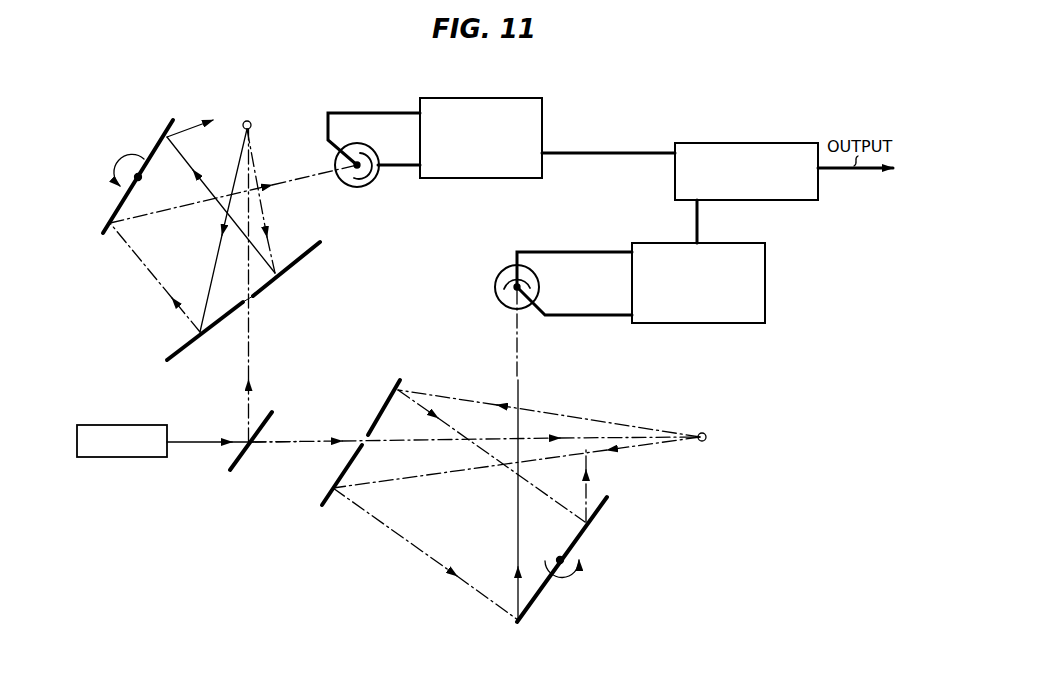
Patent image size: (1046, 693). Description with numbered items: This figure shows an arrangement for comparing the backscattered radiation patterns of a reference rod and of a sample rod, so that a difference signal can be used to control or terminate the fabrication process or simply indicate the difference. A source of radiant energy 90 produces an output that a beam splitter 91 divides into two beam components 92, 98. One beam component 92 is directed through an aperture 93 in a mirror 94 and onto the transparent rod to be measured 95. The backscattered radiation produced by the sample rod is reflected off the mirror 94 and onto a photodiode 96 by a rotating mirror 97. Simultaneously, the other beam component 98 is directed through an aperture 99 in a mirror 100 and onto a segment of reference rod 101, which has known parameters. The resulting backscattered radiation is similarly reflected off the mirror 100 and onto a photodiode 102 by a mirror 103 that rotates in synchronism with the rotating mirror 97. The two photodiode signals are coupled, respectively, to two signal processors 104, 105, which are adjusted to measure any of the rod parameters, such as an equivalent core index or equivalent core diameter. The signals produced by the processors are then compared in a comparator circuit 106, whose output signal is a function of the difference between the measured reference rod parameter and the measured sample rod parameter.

The source of radiant energy 90 is at (140, 425).
The beam splitter 91 is at (232, 466).
The beam component 92 is at (272, 442).
The aperture 93 is at (368, 432).
The mirror 94 is at (350, 462).
The transparent rod to be measured 95 is at (704, 433).
The photodiode 96 is at (501, 274).
The rotating mirror 97 is at (538, 595).
The beam component 98 is at (249, 358).
The aperture 99 is at (250, 300).
The mirror 100 is at (307, 253).
The segment of reference rod 101 is at (249, 121).
The photodiode 102 is at (372, 143).
The mirror 103 is at (157, 137).
The signal processor 104 is at (765, 292).
The signal processor 105 is at (542, 122).
The comparator circuit 106 is at (737, 142).